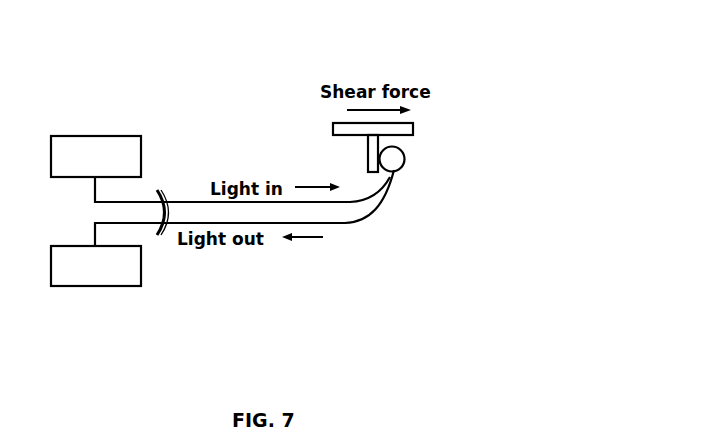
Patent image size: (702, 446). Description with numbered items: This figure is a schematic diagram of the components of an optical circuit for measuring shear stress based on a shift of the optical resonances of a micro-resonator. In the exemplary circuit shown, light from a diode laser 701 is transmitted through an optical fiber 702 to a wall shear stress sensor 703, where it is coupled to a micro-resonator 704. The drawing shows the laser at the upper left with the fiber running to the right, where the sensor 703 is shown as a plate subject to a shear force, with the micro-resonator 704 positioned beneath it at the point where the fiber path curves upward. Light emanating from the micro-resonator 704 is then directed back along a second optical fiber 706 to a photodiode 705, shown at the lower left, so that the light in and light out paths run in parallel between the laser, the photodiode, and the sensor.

The diode laser 701 is at (73, 136).
The optical fiber 702 is at (192, 200).
The wall shear stress sensor 703 is at (413, 126).
The micro-resonator 704 is at (400, 168).
The photodiode 705 is at (98, 286).
The optical fiber 706 is at (335, 223).